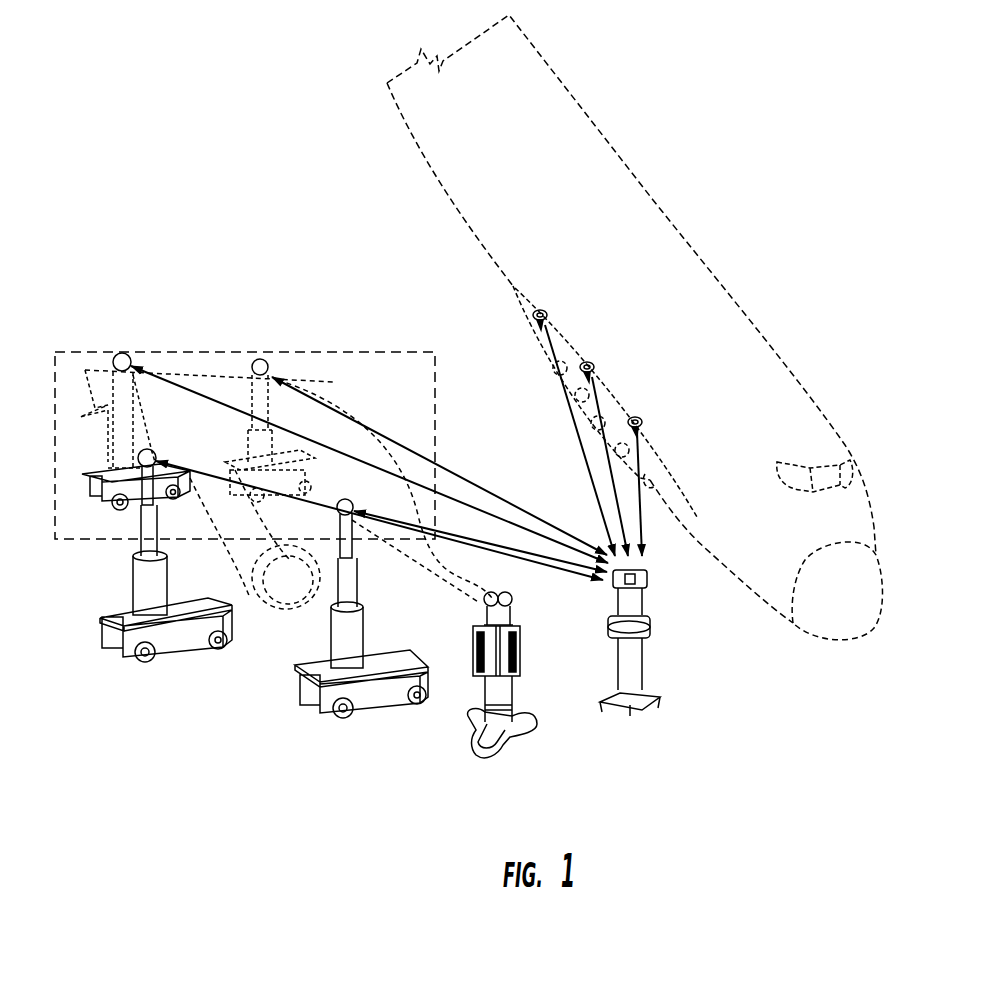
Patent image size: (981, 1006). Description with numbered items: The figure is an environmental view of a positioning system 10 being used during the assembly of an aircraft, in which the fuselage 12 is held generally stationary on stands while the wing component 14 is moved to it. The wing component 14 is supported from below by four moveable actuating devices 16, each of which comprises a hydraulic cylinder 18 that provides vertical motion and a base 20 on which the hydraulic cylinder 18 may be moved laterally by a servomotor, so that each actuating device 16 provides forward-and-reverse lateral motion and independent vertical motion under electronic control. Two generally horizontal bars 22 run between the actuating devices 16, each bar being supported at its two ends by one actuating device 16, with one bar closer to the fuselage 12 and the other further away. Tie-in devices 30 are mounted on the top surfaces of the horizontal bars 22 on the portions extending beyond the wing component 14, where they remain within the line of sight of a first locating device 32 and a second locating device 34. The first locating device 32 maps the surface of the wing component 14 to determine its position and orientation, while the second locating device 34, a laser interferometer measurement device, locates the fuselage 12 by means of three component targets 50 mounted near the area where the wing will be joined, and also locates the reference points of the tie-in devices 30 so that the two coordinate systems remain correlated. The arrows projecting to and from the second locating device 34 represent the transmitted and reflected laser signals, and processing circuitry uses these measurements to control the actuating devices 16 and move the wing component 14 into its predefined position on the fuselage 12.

The positioning system 10 is at (718, 633).
The fuselage 12 is at (692, 278).
The wing component 14 is at (283, 588).
The actuating device 16 is at (80, 462).
The hydraulic cylinder 18 is at (118, 463).
The base 20 is at (177, 653).
The generally horizontal bar 22 is at (143, 428).
The tie-in device 30 is at (118, 354).
The first locating device 32 is at (514, 730).
The second locating device 34 is at (633, 684).
The component target 50 is at (541, 311).